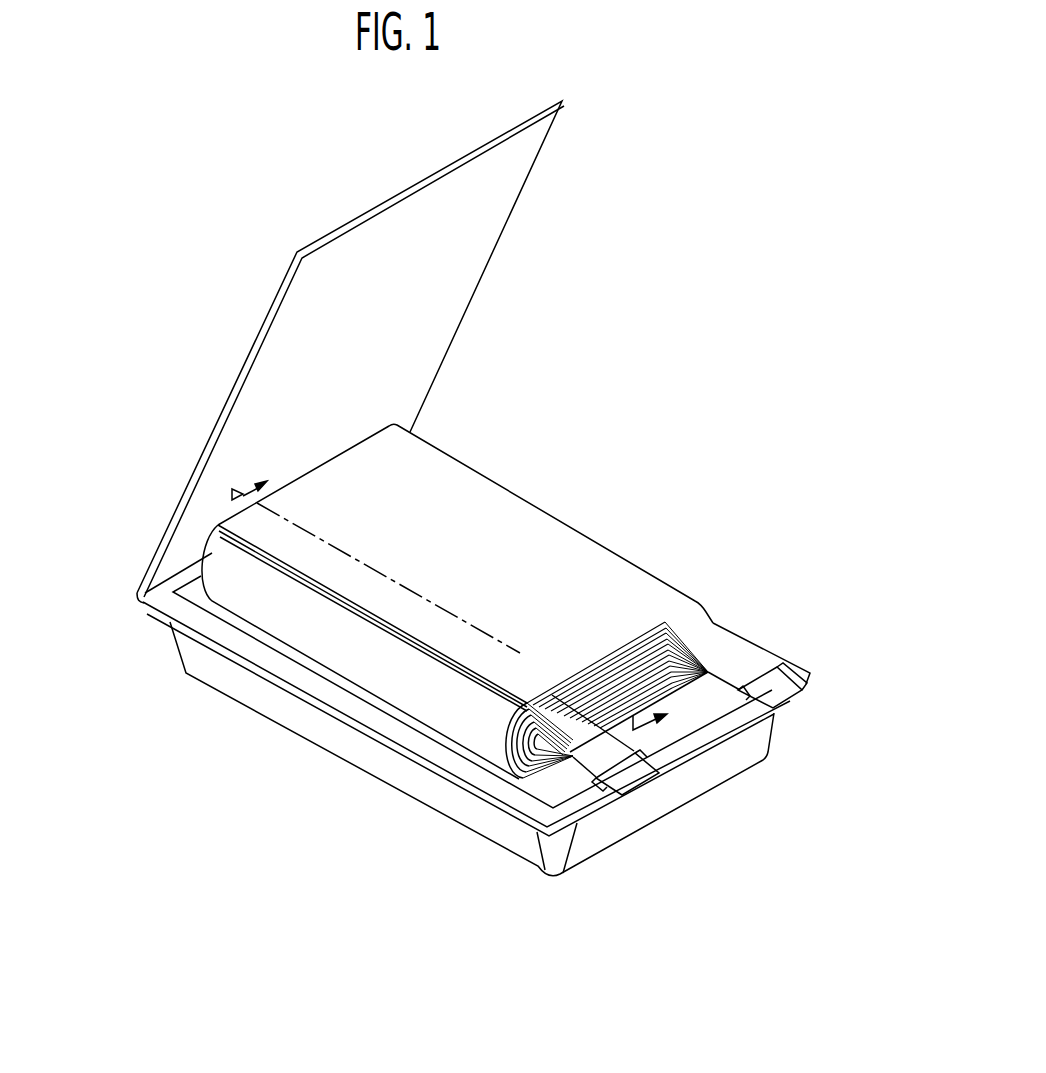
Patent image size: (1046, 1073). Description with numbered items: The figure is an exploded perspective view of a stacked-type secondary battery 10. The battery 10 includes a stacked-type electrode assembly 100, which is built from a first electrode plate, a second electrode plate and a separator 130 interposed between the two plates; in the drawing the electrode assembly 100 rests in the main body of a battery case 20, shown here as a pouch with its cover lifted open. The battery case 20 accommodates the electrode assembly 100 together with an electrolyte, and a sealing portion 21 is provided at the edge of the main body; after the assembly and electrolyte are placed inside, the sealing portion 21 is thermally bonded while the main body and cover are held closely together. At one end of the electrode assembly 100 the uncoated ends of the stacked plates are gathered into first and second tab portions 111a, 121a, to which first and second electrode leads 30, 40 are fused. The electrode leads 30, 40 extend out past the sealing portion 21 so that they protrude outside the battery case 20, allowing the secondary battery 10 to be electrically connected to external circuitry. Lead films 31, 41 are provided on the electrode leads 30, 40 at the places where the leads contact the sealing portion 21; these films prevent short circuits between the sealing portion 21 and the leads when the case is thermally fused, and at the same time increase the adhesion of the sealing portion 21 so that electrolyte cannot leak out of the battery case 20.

The secondary battery 10 is at (208, 313).
The battery case 20 is at (158, 660).
The sealing portion 21 is at (177, 608).
The stacked-type electrode assembly 100 is at (603, 433).
The separator 130 is at (587, 555).
The first tab portion 111a is at (720, 660).
The second tab portion 121a is at (520, 758).
The first electrode lead 30 is at (781, 698).
The lead film 31 is at (775, 681).
The second electrode lead 40 is at (641, 777).
The lead film 41 is at (601, 786).